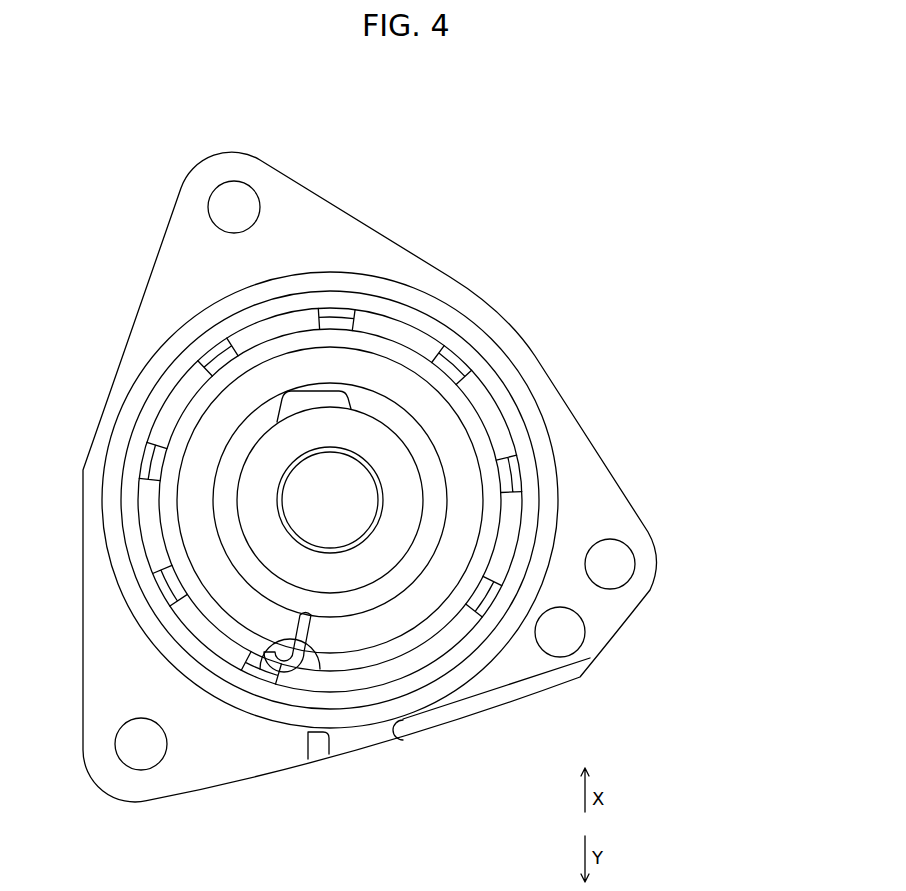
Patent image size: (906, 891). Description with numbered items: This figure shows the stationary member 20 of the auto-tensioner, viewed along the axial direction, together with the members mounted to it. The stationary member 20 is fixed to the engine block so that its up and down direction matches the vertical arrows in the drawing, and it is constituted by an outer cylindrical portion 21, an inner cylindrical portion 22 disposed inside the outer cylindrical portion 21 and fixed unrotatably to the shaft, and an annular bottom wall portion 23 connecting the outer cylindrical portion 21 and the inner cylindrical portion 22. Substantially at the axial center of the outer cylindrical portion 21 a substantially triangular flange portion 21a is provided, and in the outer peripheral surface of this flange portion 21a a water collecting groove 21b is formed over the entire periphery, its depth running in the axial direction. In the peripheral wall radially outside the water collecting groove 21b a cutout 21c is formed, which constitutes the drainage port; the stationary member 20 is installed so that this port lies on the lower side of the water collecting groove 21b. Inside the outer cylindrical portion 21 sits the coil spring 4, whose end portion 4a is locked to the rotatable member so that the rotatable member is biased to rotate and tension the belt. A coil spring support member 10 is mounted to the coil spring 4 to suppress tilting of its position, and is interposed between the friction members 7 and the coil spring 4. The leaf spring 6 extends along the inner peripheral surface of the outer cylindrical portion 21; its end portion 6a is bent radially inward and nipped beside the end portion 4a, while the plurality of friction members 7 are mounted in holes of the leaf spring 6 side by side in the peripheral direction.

The stationary member 20 is at (347, 232).
The outer cylindrical portion 21 is at (518, 433).
The flange portion 21a is at (290, 198).
The water collecting groove 21b is at (548, 468).
The cutout 21c is at (330, 741).
The inner cylindrical portion 22 is at (397, 463).
The annular bottom wall portion 23 is at (417, 653).
The coil spring support member 10 is at (185, 413).
The coil spring 4 is at (193, 500).
The end portion 4a is at (262, 652).
The leaf spring 6 is at (170, 582).
The end portion 6a is at (323, 652).
The friction members 7 is at (402, 332).